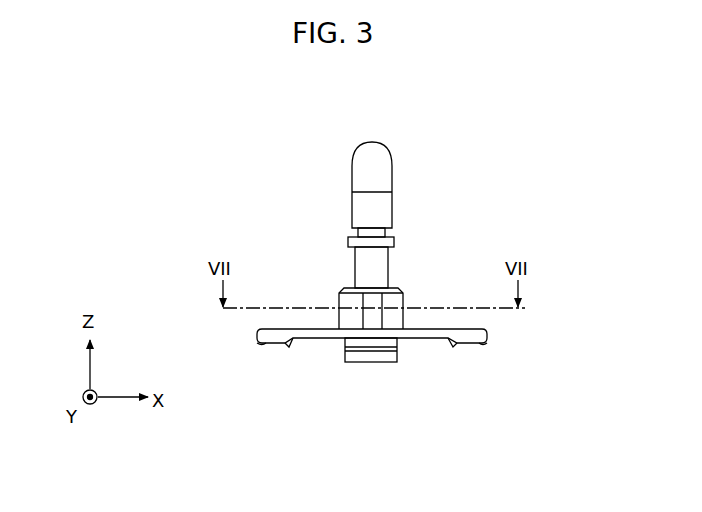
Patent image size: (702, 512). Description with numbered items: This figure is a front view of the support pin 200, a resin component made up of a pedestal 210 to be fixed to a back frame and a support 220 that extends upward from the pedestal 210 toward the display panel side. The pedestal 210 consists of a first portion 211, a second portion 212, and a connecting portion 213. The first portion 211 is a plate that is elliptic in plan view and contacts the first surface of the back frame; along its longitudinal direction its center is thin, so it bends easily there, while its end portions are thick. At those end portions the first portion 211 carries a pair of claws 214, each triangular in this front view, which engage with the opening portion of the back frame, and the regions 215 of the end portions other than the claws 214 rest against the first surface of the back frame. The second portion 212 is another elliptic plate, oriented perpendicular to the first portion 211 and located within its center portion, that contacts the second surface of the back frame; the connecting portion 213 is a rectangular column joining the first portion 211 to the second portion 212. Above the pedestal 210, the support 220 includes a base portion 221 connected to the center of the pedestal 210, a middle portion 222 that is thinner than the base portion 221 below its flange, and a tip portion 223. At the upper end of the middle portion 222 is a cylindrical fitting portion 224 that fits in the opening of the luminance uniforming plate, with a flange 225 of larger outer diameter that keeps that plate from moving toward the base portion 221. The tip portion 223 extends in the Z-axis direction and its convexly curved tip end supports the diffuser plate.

The support pin 200 is at (483, 76).
The pedestal 210 is at (444, 433).
The first portion 211 is at (260, 335).
The second portion 212 is at (367, 358).
The connecting portion 213 is at (395, 346).
The claws 214 is at (281, 345).
The regions 215 is at (267, 345).
The support 220 is at (269, 139).
The base portion 221 is at (346, 302).
The middle portion 222 is at (384, 263).
The tip portion 223 is at (362, 186).
The fitting portion 224 is at (385, 231).
The flange 225 is at (352, 241).